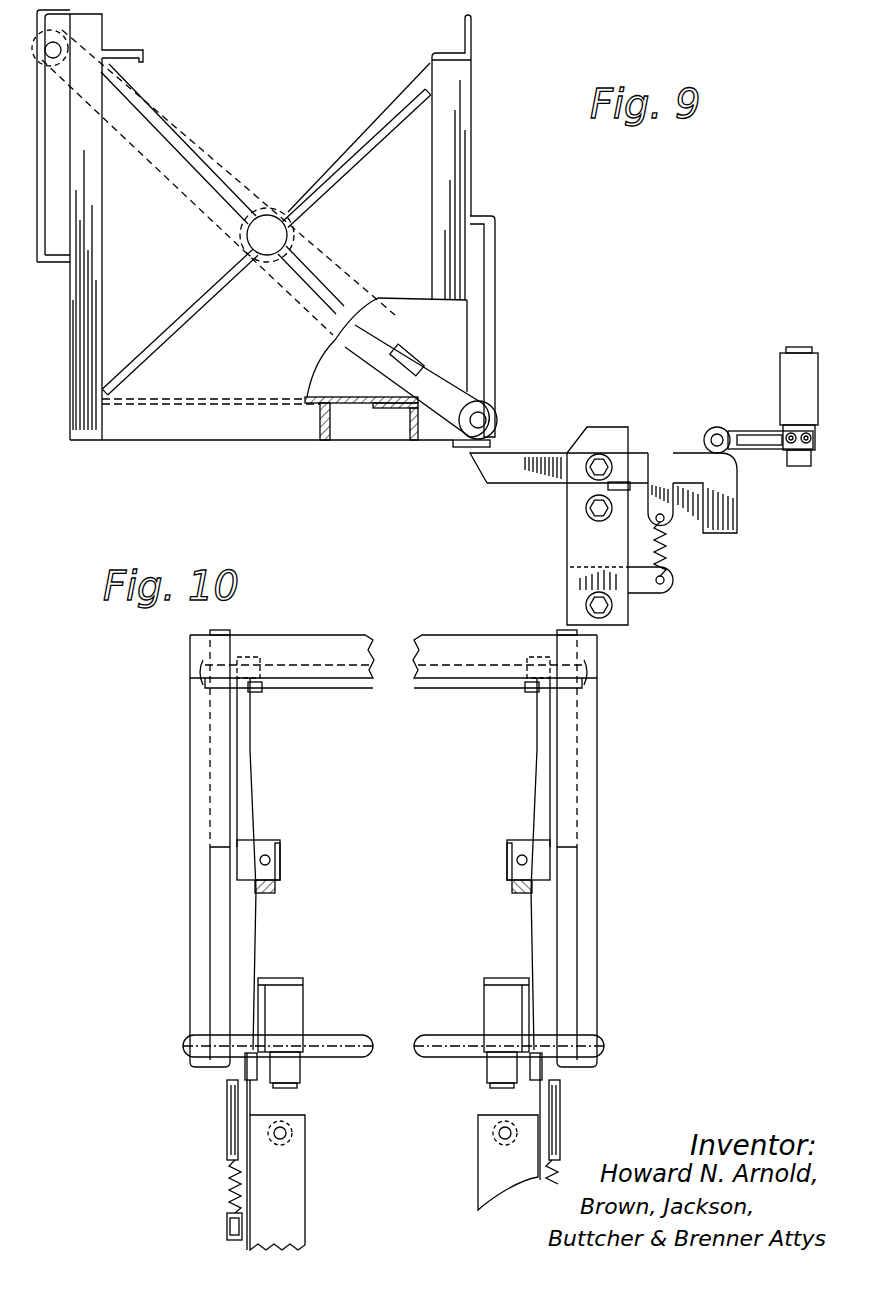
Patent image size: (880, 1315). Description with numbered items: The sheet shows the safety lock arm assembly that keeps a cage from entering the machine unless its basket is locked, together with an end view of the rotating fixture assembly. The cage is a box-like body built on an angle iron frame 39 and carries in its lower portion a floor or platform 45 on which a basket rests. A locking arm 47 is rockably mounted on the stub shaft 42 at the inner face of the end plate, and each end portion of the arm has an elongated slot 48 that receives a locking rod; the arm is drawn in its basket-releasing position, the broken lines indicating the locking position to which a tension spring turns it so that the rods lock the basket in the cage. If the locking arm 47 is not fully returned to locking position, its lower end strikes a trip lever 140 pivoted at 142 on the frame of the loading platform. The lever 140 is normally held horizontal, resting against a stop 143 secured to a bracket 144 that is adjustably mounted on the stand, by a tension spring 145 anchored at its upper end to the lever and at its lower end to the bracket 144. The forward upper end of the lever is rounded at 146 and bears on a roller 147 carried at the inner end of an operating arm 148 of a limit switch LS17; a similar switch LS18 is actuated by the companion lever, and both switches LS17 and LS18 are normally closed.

In FIG. 9, the angle iron frame 39 is at (447, 113).
In FIG. 9, the stub shaft 42 is at (266, 222).
In FIG. 9, the floor or platform 45 is at (338, 395).
In FIG. 9, the locking arm 47 is at (387, 318).
In FIG. 9, the elongated slot 48 is at (423, 370).
In FIG. 9, the trip lever 140 is at (525, 458).
In FIG. 9, the pivot 142 is at (588, 472).
In FIG. 9, the stop 143 is at (611, 517).
In FIG. 9, the bracket 144 is at (570, 560).
In FIG. 9, the tension spring 145 is at (672, 548).
In FIG. 9, the rounded end 146 is at (733, 463).
In FIG. 9, the roller 147 is at (714, 428).
In FIG. 9, the operating arm 148 is at (753, 430).
In FIG. 10, the limit switch LS17 is at (290, 983).
In FIG. 9, the limit switch LS18 is at (797, 358).
In FIG. 10, the limit switch LS18 is at (493, 983).